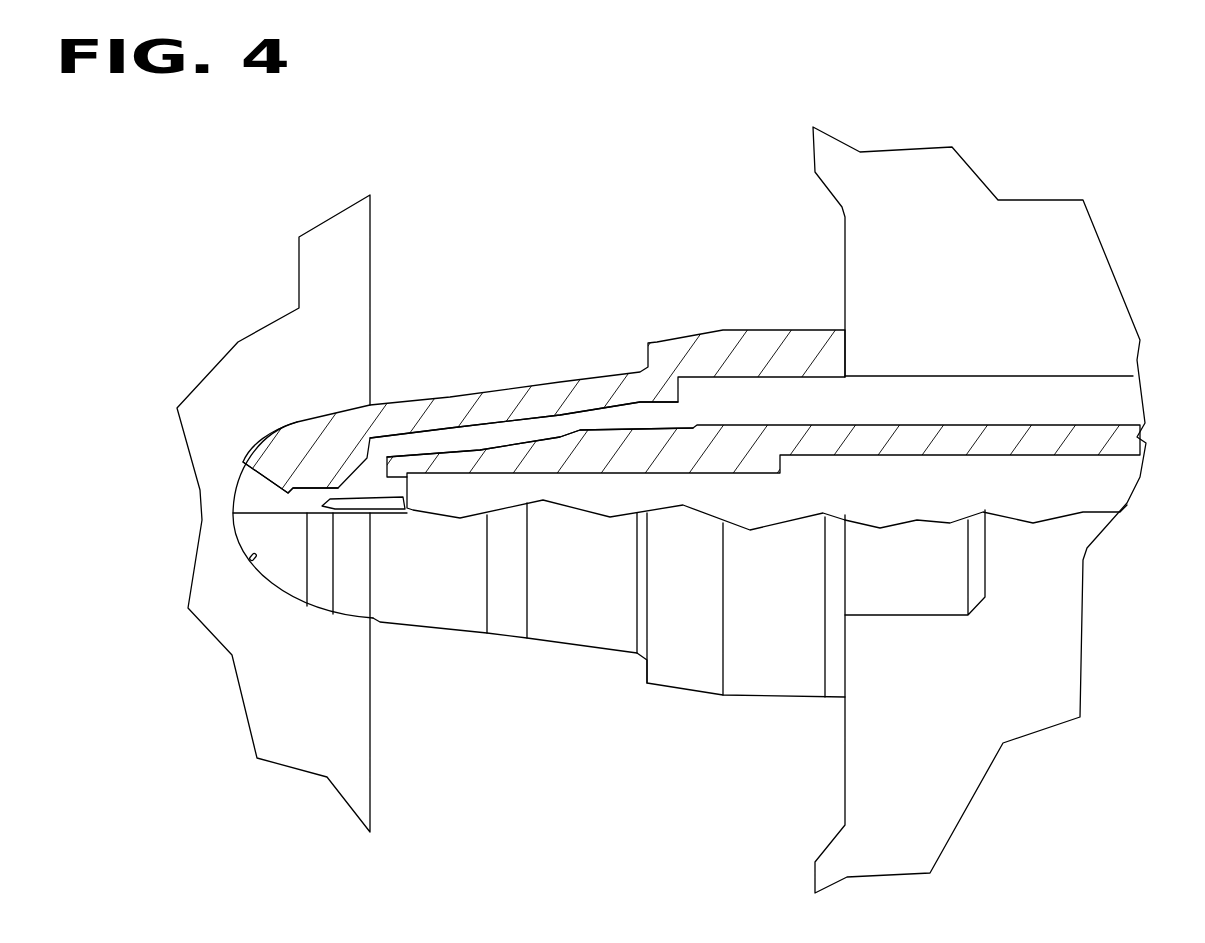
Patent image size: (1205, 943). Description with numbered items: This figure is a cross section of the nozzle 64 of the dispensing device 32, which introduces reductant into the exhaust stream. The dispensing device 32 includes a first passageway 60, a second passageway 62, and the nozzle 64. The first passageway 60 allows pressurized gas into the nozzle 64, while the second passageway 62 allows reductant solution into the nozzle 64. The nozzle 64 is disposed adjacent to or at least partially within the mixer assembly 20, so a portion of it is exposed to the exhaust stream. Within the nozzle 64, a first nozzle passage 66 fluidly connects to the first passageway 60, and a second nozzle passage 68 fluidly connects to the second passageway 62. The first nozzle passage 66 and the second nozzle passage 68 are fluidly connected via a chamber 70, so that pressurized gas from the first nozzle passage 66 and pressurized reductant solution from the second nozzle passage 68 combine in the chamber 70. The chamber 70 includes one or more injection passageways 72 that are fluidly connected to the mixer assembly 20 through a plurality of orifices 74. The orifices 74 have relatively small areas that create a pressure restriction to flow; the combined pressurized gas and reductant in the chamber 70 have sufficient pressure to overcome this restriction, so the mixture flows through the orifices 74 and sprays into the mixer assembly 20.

The mixer assembly 20 is at (293, 753).
The dispensing device 32 is at (957, 175).
The first passageway 60 is at (948, 394).
The second passageway 62 is at (1018, 503).
The nozzle 64 is at (574, 252).
The first nozzle passage 66 is at (550, 426).
The second nozzle passage 68 is at (500, 503).
The chamber 70 is at (283, 512).
The injection passageway 72 is at (293, 476).
The orifice 74 is at (250, 462).